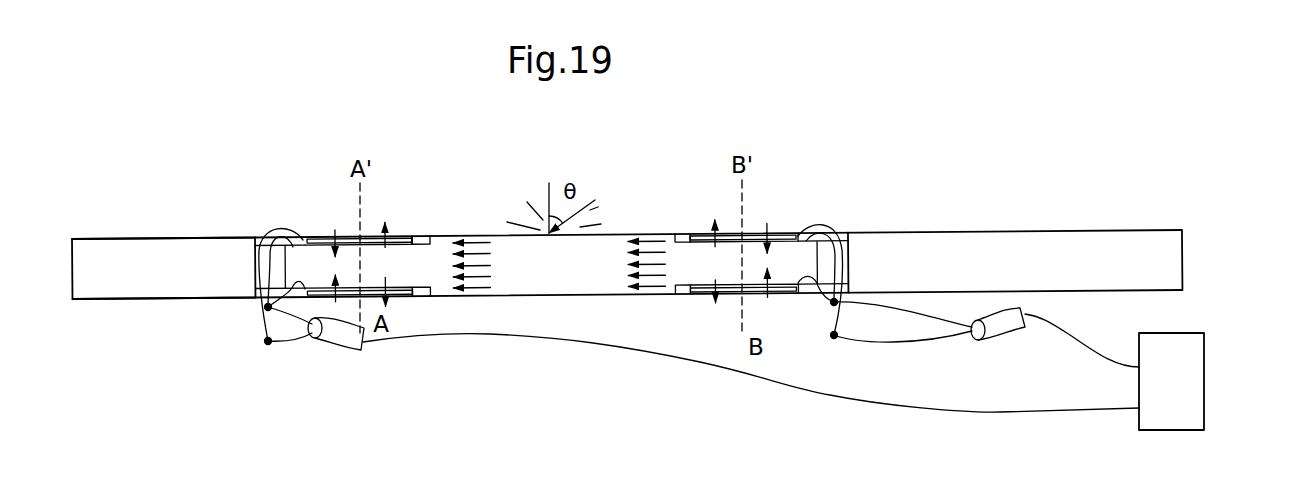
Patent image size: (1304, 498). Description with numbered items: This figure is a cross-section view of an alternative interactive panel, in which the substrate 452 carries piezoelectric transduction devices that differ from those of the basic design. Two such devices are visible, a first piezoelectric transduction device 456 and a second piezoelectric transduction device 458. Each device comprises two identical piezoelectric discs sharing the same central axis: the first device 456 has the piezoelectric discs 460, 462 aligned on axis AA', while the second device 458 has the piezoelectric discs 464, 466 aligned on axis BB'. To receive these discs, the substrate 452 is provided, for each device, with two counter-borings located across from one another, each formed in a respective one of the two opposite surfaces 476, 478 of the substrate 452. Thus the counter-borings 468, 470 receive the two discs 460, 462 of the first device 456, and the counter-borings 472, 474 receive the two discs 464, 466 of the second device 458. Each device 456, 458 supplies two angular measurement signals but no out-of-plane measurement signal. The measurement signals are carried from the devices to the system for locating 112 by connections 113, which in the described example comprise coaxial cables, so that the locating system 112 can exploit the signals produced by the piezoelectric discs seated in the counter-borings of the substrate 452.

The substrate 452 is at (962, 240).
The surface of the substrate 476 is at (153, 236).
The surface of the substrate 478 is at (115, 302).
The piezoelectric transduction device 456 is at (373, 223).
The piezoelectric transduction device 458 is at (767, 208).
The piezoelectric disc 460 is at (320, 238).
The piezoelectric disc 462 is at (397, 292).
The counter-boring 468 is at (422, 238).
The counter-boring 470 is at (423, 299).
The piezoelectric disc 464 is at (707, 233).
The piezoelectric disc 466 is at (697, 293).
The counter-boring 472 is at (681, 233).
The counter-boring 474 is at (682, 291).
The connections 113 is at (1053, 323).
The system for locating 112 is at (1204, 355).